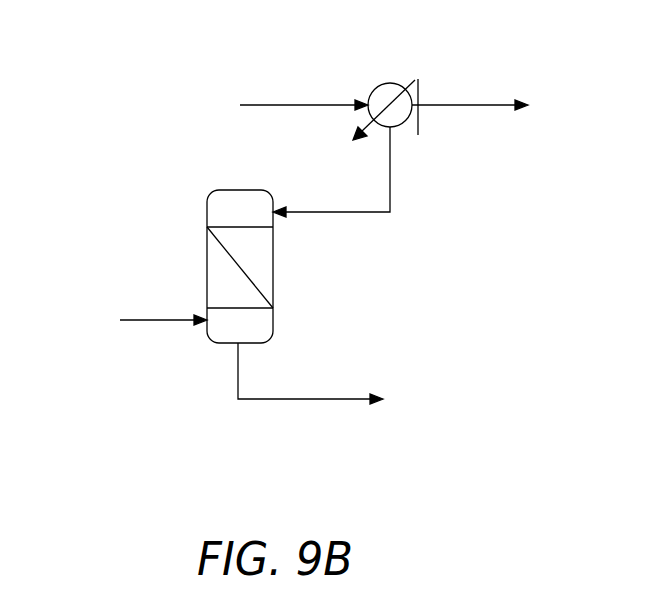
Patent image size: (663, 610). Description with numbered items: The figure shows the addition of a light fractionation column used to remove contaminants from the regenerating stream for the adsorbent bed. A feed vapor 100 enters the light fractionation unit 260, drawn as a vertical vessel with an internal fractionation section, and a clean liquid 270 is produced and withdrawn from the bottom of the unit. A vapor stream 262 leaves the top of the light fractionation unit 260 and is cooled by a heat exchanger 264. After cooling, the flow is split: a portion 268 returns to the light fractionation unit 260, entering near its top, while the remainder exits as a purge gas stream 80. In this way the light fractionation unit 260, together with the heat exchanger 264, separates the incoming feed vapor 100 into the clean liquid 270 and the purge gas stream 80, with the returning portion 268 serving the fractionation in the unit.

The vapor stream 262 is at (290, 105).
The heat exchanger 264 is at (390, 83).
The purge gas stream 80 is at (470, 105).
The portion 268 is at (332, 212).
The light fractionation unit 260 is at (207, 238).
The feed vapor 100 is at (140, 322).
The clean liquid 270 is at (313, 399).